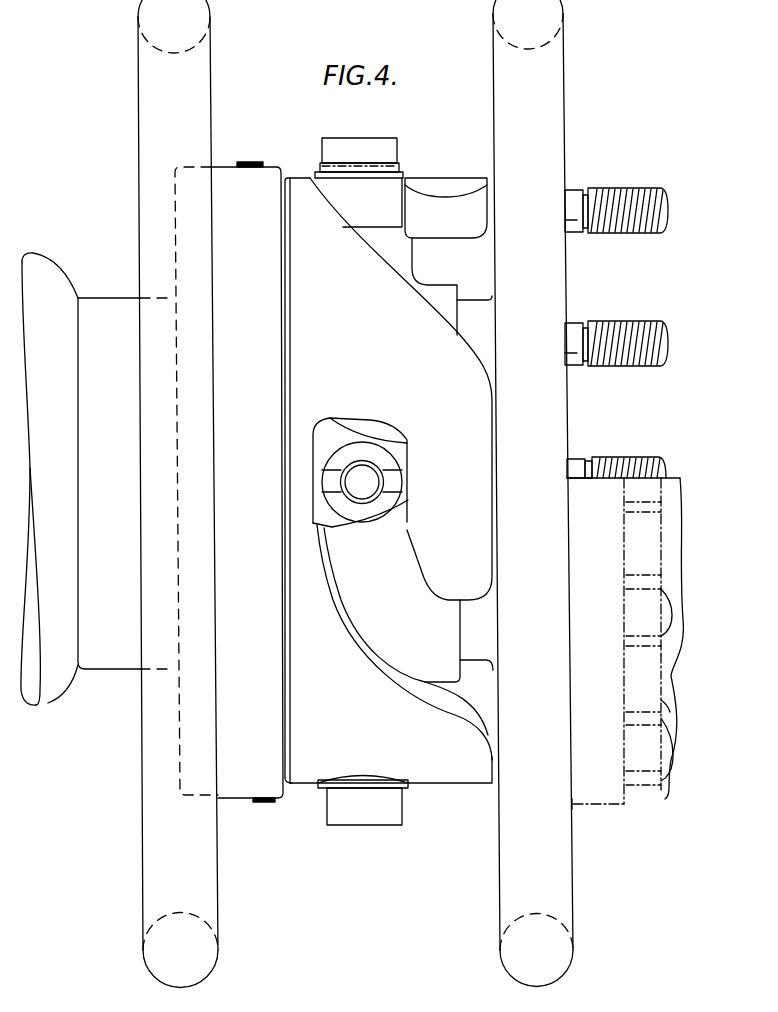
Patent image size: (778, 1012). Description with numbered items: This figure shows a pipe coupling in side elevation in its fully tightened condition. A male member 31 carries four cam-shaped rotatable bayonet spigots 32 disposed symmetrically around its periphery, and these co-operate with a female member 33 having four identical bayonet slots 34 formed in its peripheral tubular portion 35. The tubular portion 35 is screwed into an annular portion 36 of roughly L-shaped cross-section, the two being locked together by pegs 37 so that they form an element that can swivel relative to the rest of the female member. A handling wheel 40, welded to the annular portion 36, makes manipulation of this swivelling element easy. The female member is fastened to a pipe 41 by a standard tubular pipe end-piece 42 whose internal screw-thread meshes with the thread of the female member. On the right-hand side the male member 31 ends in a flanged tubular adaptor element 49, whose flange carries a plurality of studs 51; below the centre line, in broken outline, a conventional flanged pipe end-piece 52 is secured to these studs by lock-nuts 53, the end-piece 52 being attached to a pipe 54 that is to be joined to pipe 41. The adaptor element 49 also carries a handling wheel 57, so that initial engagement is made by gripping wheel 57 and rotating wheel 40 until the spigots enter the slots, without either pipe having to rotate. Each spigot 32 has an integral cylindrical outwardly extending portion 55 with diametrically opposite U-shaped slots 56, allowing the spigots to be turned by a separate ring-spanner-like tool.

The male member 31 is at (445, 663).
The bayonet spigots 32 is at (405, 203).
The female member 33 is at (310, 784).
The bayonet slots 34 is at (420, 252).
The peripheral tubular portion 35 is at (295, 180).
The annular portion 36 is at (228, 175).
The pegs 37 is at (253, 163).
The handling wheel 40 is at (152, 757).
The pipe 41 is at (58, 695).
The tubular pipe end-piece 42 is at (118, 662).
The adaptor element 49 is at (472, 317).
The studs 51 is at (618, 190).
The flanged pipe end-piece 52 is at (598, 805).
The lock-nuts 53 is at (636, 508).
The pipe 54 is at (664, 723).
The cylindrical outwardly extending portion 55 is at (387, 155).
The U-shaped slots 56 is at (330, 480).
The handling wheel 57 is at (552, 98).